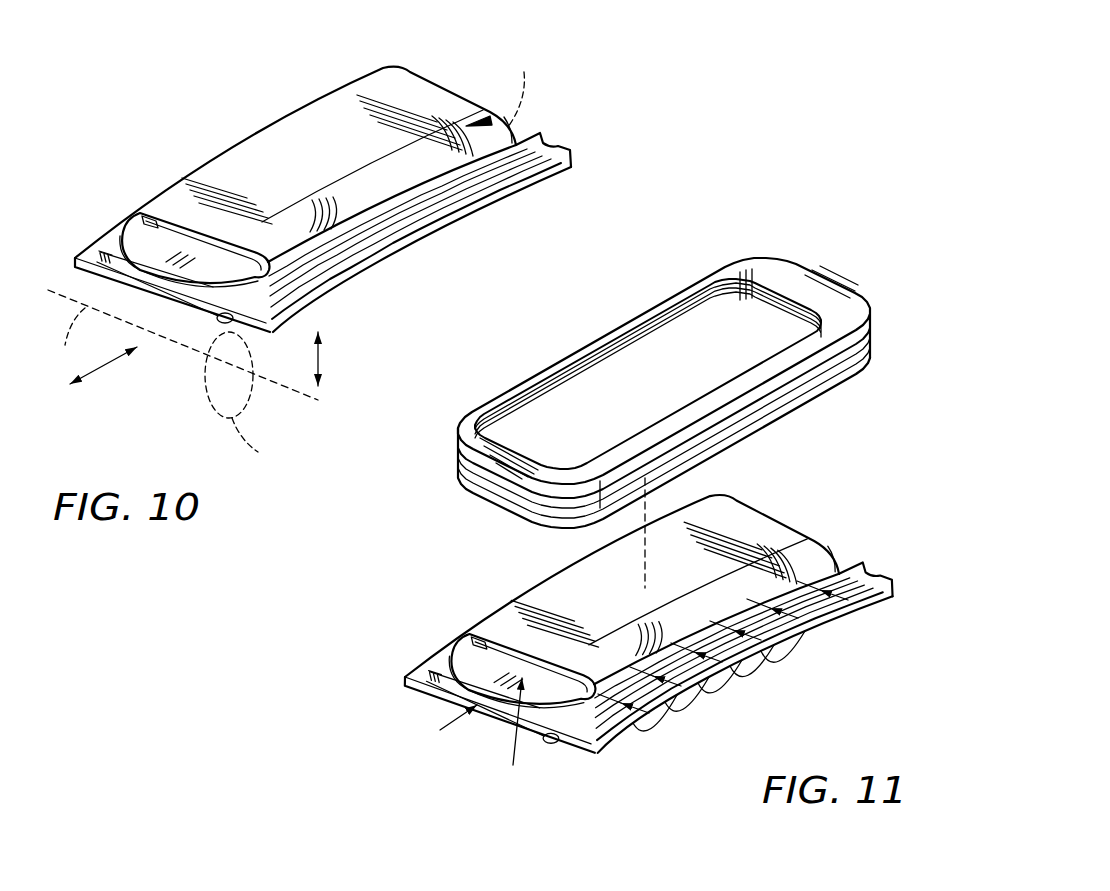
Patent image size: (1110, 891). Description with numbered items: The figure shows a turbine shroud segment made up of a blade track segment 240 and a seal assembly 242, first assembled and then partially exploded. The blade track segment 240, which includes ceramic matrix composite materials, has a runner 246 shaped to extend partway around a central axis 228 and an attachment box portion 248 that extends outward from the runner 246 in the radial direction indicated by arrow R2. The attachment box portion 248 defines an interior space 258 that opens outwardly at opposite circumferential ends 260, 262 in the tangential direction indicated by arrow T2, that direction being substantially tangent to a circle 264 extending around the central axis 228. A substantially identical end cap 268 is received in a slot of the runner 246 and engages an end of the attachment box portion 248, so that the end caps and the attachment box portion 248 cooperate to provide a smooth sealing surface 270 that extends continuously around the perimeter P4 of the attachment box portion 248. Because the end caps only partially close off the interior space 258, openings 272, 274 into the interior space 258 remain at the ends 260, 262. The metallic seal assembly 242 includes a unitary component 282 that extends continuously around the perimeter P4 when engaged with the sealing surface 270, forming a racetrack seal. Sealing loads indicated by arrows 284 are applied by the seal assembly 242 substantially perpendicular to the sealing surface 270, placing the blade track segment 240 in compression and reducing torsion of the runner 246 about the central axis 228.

In FIG. 10, the central axis 228 is at (92, 346).
In FIG. 10, the blade track segment 240 is at (461, 102).
In FIG. 11, the blade track segment 240 is at (777, 537).
In FIG. 11, the seal assembly 242 is at (785, 283).
In FIG. 10, the runner 246 is at (382, 265).
In FIG. 11, the runner 246 is at (822, 622).
In FIG. 10, the attachment box portion 248 is at (174, 200).
In FIG. 11, the attachment box portion 248 is at (734, 533).
In FIG. 10, the interior space 258 is at (192, 236).
In FIG. 11, the interior space 258 is at (505, 657).
In FIG. 10, the circumferential end 260 is at (423, 78).
In FIG. 11, the circumferential end 260 is at (767, 517).
In FIG. 10, the circumferential end 262 is at (258, 246).
In FIG. 11, the circumferential end 262 is at (570, 692).
In FIG. 10, the circle 264 is at (243, 408).
In FIG. 10, the end cap 268 is at (148, 272).
In FIG. 11, the end cap 268 is at (442, 697).
In FIG. 10, the sealing surface 270 is at (355, 213).
In FIG. 11, the sealing surface 270 is at (618, 677).
In FIG. 10, the opening 272 is at (525, 88).
In FIG. 11, the opening 272 is at (797, 557).
In FIG. 10, the opening 274 is at (145, 228).
In FIG. 11, the opening 274 is at (520, 673).
In FIG. 11, the unitary component 282 is at (508, 497).
In FIG. 11, the sealing loads 284 is at (440, 730).
In FIG. 10, the perimeter P4 is at (489, 134).
In FIG. 10, the radial direction R2 is at (322, 357).
In FIG. 10, the tangential direction T2 is at (103, 367).